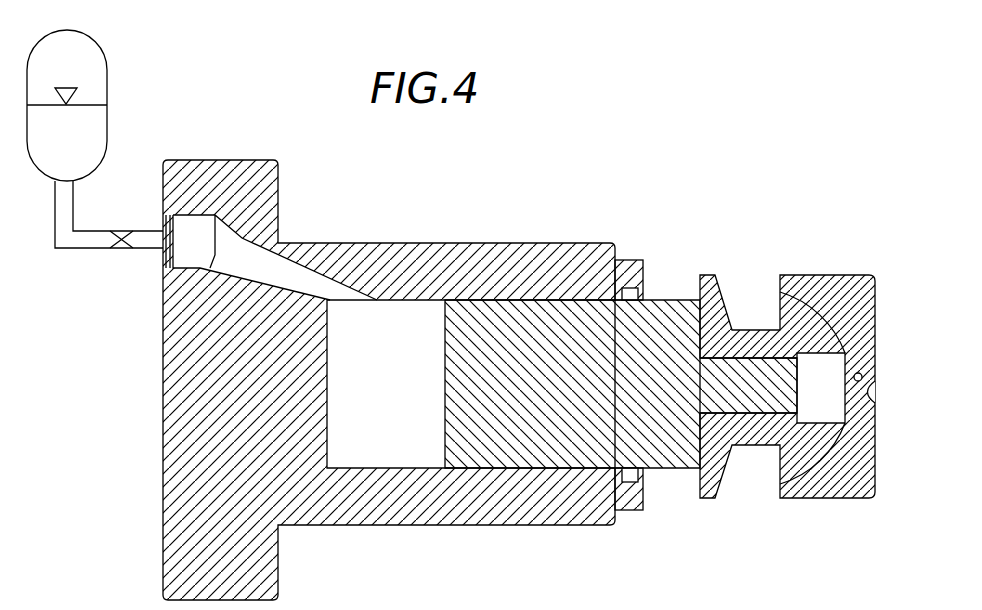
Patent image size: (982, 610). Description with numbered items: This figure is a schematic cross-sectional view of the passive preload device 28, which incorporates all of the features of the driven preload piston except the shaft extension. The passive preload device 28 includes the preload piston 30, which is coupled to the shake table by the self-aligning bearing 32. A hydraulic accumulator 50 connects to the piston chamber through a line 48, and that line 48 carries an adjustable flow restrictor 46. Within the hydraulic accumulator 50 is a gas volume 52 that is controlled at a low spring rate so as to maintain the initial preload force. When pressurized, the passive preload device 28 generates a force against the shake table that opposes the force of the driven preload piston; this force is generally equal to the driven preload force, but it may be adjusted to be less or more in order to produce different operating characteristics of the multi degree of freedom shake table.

The passive preload device 28 is at (517, 212).
The preload piston 30 is at (510, 428).
The self-aligning bearing 32 is at (799, 255).
The adjustable flow restrictor 46 is at (123, 210).
The line 48 is at (147, 238).
The hydraulic accumulator 50 is at (144, 167).
The gas volume 52 is at (82, 60).